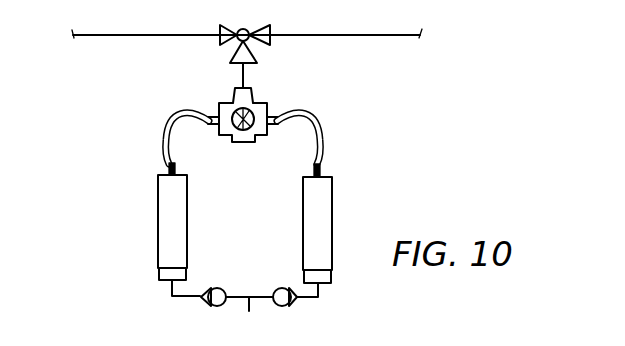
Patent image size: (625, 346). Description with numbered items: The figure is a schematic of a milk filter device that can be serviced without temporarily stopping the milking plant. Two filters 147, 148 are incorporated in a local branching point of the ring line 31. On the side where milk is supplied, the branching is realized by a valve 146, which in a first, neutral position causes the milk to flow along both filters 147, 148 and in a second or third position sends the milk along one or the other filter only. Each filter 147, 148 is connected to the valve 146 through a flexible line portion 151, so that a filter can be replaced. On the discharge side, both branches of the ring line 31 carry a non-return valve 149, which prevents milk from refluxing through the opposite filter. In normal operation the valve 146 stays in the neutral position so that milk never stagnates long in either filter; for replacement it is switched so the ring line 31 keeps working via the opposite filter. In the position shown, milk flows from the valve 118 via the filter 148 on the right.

The ring line 31 is at (419, 37).
The valve 118 is at (226, 43).
The valve 146 is at (266, 100).
The filter 147 is at (158, 192).
The filter 148 is at (333, 198).
The non-return valve 149 is at (277, 287).
The flexible line portion 151 is at (312, 145).